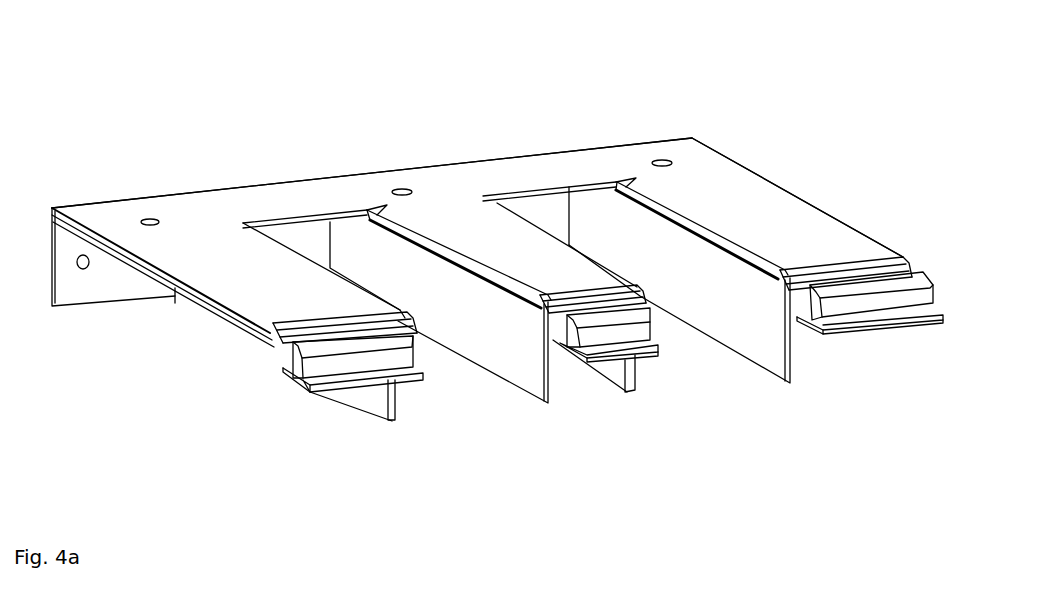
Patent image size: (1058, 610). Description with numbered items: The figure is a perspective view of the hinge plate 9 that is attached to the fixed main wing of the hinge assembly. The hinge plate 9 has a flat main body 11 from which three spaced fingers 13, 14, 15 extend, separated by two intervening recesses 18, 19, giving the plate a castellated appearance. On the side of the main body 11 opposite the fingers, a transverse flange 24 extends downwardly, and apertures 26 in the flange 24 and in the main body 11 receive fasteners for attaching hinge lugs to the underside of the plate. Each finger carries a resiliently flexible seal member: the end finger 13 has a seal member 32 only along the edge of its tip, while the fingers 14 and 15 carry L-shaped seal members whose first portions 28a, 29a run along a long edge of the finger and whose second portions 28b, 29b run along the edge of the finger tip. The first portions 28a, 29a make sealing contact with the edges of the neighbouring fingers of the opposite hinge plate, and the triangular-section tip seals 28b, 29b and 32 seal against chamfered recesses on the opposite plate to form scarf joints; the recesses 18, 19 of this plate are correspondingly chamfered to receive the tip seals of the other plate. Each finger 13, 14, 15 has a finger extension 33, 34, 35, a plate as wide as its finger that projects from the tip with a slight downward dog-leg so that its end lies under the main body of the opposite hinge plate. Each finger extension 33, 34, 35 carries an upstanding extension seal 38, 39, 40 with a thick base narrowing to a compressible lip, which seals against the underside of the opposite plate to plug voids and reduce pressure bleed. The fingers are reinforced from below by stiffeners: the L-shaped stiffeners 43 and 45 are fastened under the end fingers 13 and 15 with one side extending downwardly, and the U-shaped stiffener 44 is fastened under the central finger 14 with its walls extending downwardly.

The hinge plate 9 is at (278, 174).
The main body 11 is at (338, 188).
The finger 13 is at (207, 275).
The finger 14 is at (497, 235).
The finger 15 is at (727, 193).
The recess 18 is at (283, 217).
The recess 19 is at (551, 186).
The transverse flange 24 is at (82, 300).
The apertures 26 is at (142, 222).
The first portion of seal member 28a is at (467, 275).
The second portion of seal member 28b is at (544, 336).
The first portion of seal member 29a is at (723, 252).
The second portion of seal member 29b is at (783, 330).
The seal member 32 is at (262, 340).
The finger extension 33 is at (297, 388).
The finger extension 34 is at (573, 345).
The finger extension 35 is at (830, 333).
The extension seal 38 is at (343, 362).
The extension seal 39 is at (627, 392).
The extension seal 40 is at (917, 283).
The stiffener 43 is at (392, 422).
The stiffener 44 is at (555, 370).
The stiffener 45 is at (780, 383).